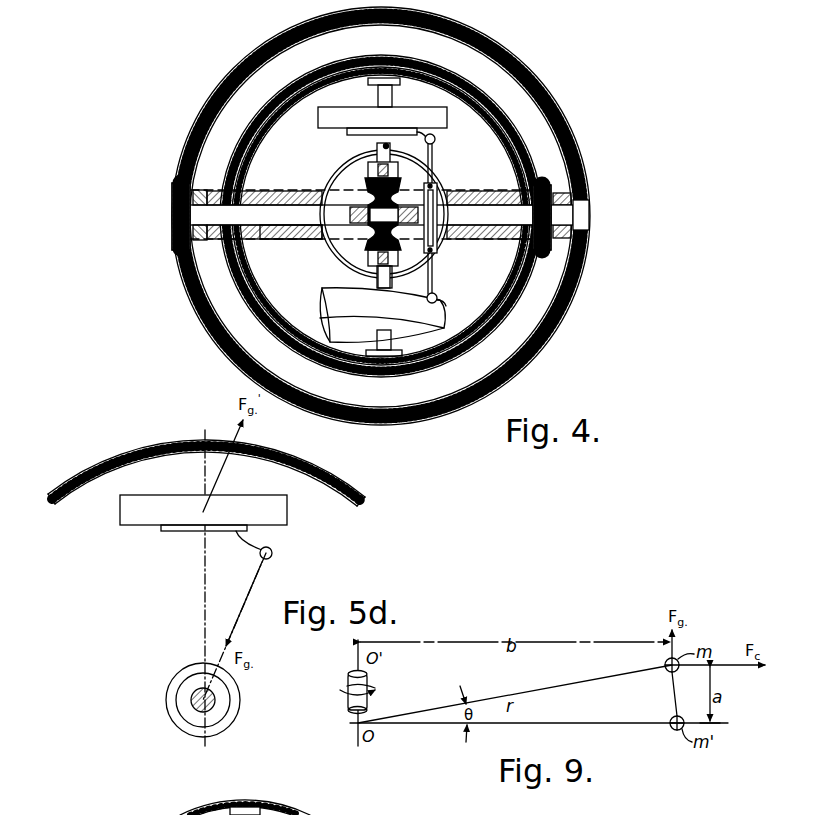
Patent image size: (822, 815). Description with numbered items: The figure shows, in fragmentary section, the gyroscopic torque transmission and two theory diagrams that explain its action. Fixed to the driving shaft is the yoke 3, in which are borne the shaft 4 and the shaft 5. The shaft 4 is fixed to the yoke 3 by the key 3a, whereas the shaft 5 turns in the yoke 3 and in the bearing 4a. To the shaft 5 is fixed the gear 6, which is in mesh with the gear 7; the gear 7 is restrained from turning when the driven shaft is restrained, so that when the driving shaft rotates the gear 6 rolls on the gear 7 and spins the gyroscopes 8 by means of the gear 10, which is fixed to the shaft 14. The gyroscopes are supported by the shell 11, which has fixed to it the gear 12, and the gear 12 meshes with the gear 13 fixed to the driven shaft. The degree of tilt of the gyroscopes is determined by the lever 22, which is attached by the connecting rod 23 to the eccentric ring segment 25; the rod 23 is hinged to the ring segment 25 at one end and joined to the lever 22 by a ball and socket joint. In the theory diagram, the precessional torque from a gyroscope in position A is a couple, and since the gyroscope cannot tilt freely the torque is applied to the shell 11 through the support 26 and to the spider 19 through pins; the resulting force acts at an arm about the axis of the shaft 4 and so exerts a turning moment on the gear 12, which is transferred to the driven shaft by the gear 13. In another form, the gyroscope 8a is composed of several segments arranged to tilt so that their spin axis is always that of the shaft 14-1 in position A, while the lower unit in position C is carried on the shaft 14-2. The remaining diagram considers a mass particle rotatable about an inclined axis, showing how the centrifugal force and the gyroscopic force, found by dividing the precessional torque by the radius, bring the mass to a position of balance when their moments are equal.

In FIG. 4, the yoke 3 is at (202, 190).
In FIG. 4, the key 3a is at (578, 222).
In FIG. 4, the shaft 4 is at (352, 214).
In FIG. 5D, the shaft 4 is at (214, 712).
In FIG. 4, the bearing 4a is at (266, 195).
In FIG. 4, the shaft 5 is at (282, 226).
In FIG. 4, the gear 6 is at (184, 252).
In FIG. 4, the gear 7 is at (192, 290).
In FIG. 4, the gyroscope 8 is at (448, 118).
In FIG. 5D, the gyroscope 8 is at (290, 514).
In FIG. 4, the gyroscope 8a is at (458, 322).
In FIG. 4, the gear 10 is at (370, 192).
In FIG. 4, the shell 11 is at (512, 292).
In FIG. 5D, the shell 11 is at (346, 494).
In FIG. 4, the gear 12 is at (542, 250).
In FIG. 4, the gear 13 is at (248, 284).
In FIG. 4, the shaft 14 is at (392, 282).
In FIG. 4, the shaft 14-1 is at (378, 97).
In FIG. 4, the lower support stem 14-2 is at (377, 340).
In FIG. 4, the spider 19 is at (368, 262).
In FIG. 4, the lever 22 is at (435, 142).
In FIG. 4, the connecting rod 23 is at (437, 166).
In FIG. 4, the eccentric ring segment 25 is at (438, 212).
In FIG. 5D, the eccentric ring segment 25 is at (234, 700).
In FIG. 4, the support 26 is at (398, 86).